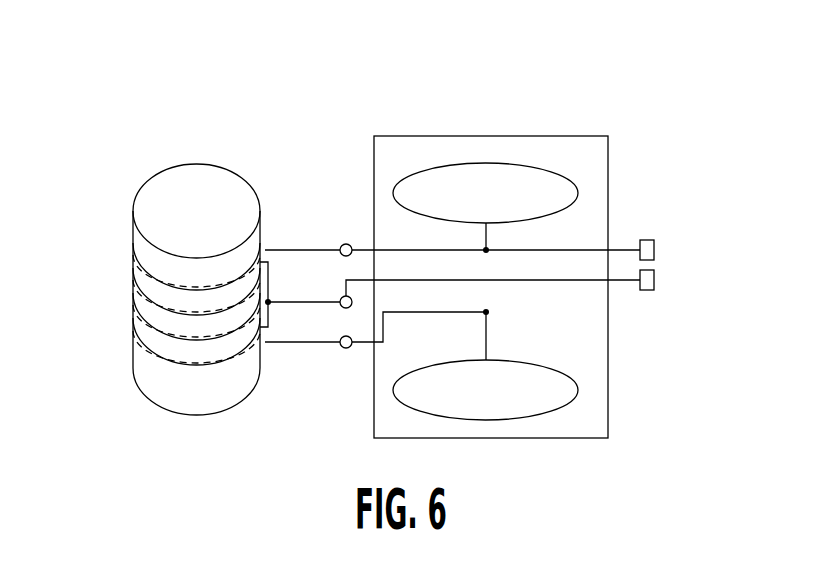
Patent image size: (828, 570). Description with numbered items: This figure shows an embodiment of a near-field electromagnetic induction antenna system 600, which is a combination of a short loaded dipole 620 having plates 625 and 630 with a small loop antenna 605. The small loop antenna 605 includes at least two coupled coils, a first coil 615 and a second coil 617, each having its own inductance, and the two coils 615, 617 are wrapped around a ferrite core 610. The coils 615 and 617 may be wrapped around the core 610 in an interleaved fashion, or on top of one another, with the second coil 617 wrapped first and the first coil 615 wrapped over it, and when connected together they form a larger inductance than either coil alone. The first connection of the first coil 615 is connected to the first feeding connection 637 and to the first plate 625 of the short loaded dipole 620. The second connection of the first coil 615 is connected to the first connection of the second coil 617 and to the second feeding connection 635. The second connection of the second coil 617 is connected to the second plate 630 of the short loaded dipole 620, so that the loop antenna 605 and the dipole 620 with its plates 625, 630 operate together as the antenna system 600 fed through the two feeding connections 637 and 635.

The antenna system 600 is at (262, 108).
The small loop antenna 605 is at (138, 137).
The ferrite core 610 is at (140, 185).
The first coil 615 is at (135, 279).
The second coil 617 is at (147, 356).
The short loaded dipole 620 is at (418, 135).
The first plate 625 is at (578, 193).
The second plate 630 is at (577, 390).
The second feeding connection 635 is at (655, 277).
The first feeding connection 637 is at (655, 247).